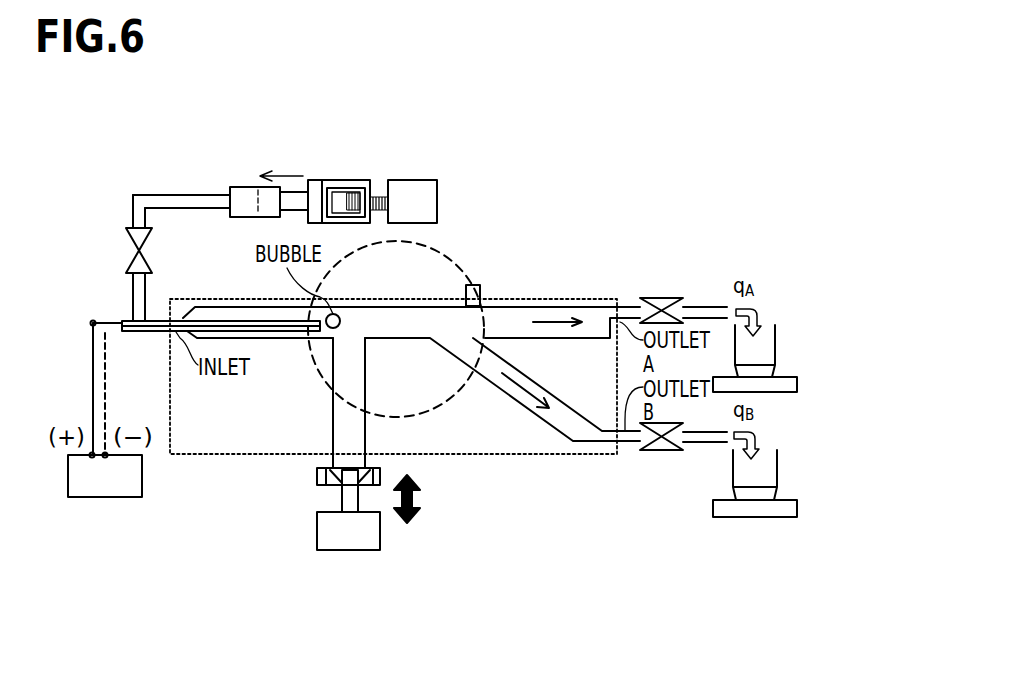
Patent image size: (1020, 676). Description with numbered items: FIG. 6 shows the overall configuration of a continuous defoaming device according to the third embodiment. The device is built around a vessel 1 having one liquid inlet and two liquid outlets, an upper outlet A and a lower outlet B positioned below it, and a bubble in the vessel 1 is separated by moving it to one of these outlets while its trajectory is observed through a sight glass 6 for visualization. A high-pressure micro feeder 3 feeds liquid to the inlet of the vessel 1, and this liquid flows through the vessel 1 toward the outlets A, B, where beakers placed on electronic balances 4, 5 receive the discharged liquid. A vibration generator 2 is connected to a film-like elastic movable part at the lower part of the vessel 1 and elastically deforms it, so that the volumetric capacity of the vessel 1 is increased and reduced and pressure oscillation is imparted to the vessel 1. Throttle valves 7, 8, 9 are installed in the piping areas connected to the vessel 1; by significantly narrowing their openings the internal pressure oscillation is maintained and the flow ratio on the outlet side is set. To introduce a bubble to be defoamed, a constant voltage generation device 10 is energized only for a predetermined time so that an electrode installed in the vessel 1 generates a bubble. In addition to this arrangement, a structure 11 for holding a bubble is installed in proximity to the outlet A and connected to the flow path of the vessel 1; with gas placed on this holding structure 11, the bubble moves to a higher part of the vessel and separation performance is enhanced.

The vessel 1 is at (393, 376).
The vibration generator 2 is at (348, 550).
The high-pressure micro feeder 3 is at (347, 180).
The electronic balance 4 is at (792, 376).
The electronic balance 5 is at (753, 517).
The sight glass 6 is at (445, 255).
The valve 7 is at (136, 250).
The valve 8 is at (666, 300).
The valve 9 is at (665, 452).
The constant voltage generation device 10 is at (63, 472).
The bubble holding structure 11 is at (481, 286).